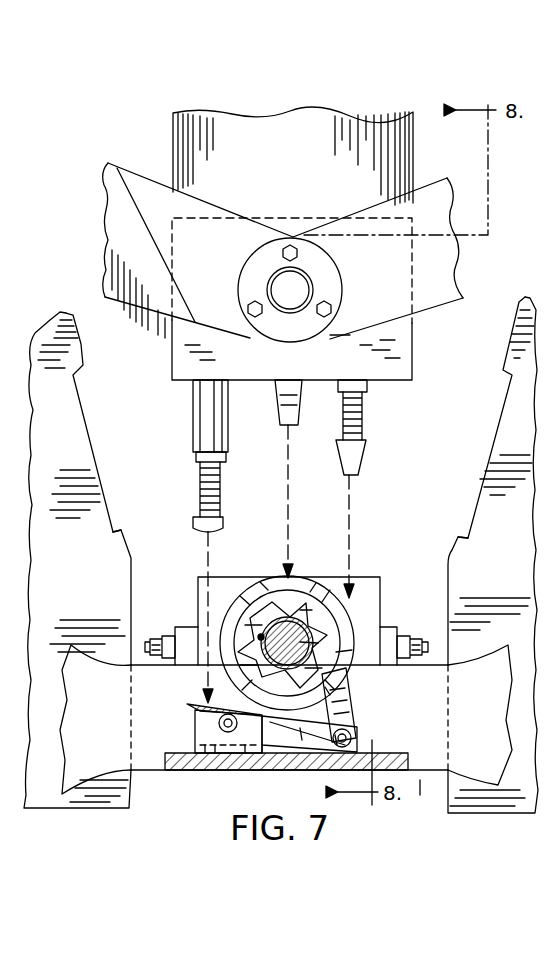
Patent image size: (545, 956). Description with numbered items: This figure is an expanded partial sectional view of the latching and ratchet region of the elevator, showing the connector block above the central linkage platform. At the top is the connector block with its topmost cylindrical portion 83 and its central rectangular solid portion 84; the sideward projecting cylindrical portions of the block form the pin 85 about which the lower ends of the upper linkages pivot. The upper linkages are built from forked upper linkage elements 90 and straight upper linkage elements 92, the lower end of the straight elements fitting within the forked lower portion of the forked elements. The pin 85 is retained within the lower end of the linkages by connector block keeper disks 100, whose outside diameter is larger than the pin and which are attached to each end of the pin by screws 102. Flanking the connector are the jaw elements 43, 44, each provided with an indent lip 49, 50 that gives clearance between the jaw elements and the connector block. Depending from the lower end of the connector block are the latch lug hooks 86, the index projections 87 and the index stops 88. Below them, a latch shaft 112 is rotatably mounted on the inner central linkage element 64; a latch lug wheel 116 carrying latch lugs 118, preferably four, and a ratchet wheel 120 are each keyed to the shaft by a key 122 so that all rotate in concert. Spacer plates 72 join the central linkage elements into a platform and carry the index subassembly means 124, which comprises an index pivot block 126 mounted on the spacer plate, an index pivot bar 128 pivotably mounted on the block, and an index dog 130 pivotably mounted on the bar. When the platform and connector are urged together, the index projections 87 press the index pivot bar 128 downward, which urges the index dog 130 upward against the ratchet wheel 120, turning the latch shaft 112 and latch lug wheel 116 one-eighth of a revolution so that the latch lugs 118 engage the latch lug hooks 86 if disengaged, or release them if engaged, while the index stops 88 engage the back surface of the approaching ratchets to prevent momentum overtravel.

The topmost cylindrical portion 83 is at (408, 152).
The forked upper linkage elements 90 is at (147, 206).
The straight upper linkage elements 92 is at (450, 264).
The connector block keeper disks 100 is at (330, 270).
The pin 85 is at (292, 290).
The screws 102 is at (332, 309).
The central rectangular solid portion 84 is at (410, 345).
The latch lug hooks 86 is at (276, 400).
The index projections 87 is at (222, 524).
The index stops 88 is at (357, 455).
The indent lip 49 is at (81, 401).
The jaw element 43 is at (115, 549).
The indent lip 50 is at (498, 419).
The jaw element 44 is at (447, 566).
The latch lug wheel 116 is at (297, 576).
The latch lugs 118 is at (240, 592).
The latch shaft 112 is at (355, 660).
The key 122 is at (260, 636).
The ratchet wheels 120 is at (207, 683).
The index dog 130 is at (356, 704).
The index subassembly means 124 is at (190, 738).
The index pivot block 126 is at (222, 745).
The index pivot bar 128 is at (277, 753).
The spacer plates 72 is at (175, 770).
The inner central linkage element 64 is at (417, 794).